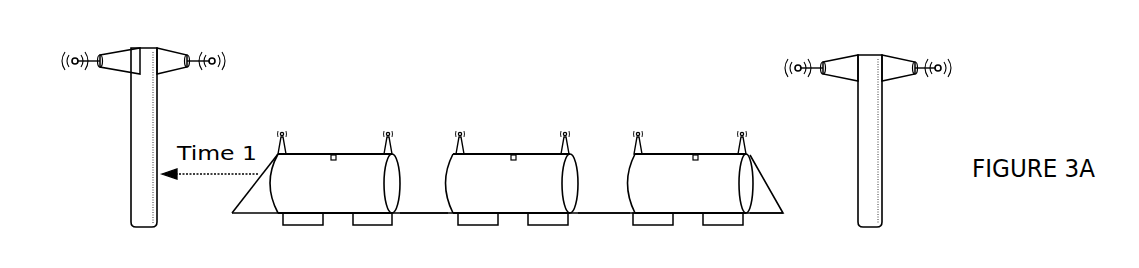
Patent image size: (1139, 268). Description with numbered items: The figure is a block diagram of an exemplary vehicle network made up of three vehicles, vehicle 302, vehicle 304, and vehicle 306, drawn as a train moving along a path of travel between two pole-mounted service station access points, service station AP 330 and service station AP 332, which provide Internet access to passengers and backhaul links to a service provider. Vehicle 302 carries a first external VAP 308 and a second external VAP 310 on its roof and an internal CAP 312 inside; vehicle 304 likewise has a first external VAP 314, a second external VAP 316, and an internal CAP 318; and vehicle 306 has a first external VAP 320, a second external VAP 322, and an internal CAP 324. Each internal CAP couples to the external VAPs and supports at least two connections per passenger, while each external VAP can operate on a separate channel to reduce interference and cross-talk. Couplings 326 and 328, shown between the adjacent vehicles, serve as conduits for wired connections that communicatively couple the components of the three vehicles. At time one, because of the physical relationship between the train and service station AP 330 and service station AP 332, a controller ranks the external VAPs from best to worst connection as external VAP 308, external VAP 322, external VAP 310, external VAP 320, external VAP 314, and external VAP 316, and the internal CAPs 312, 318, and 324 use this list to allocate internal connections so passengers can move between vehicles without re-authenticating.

The vehicle 302 is at (335, 183).
The vehicle 304 is at (512, 183).
The vehicle 306 is at (691, 183).
The first external VAP 308 is at (287, 136).
The second external VAP 310 is at (392, 138).
The internal CAP 312 is at (333, 160).
The first external VAP 314 is at (466, 138).
The second external VAP 316 is at (570, 139).
The internal CAP 318 is at (513, 160).
The first external VAP 320 is at (643, 138).
The second external VAP 322 is at (746, 138).
The internal CAP 324 is at (695, 160).
The coupling 326 is at (418, 212).
The coupling 328 is at (613, 212).
The service station AP 330 is at (157, 108).
The service station AP 332 is at (882, 118).